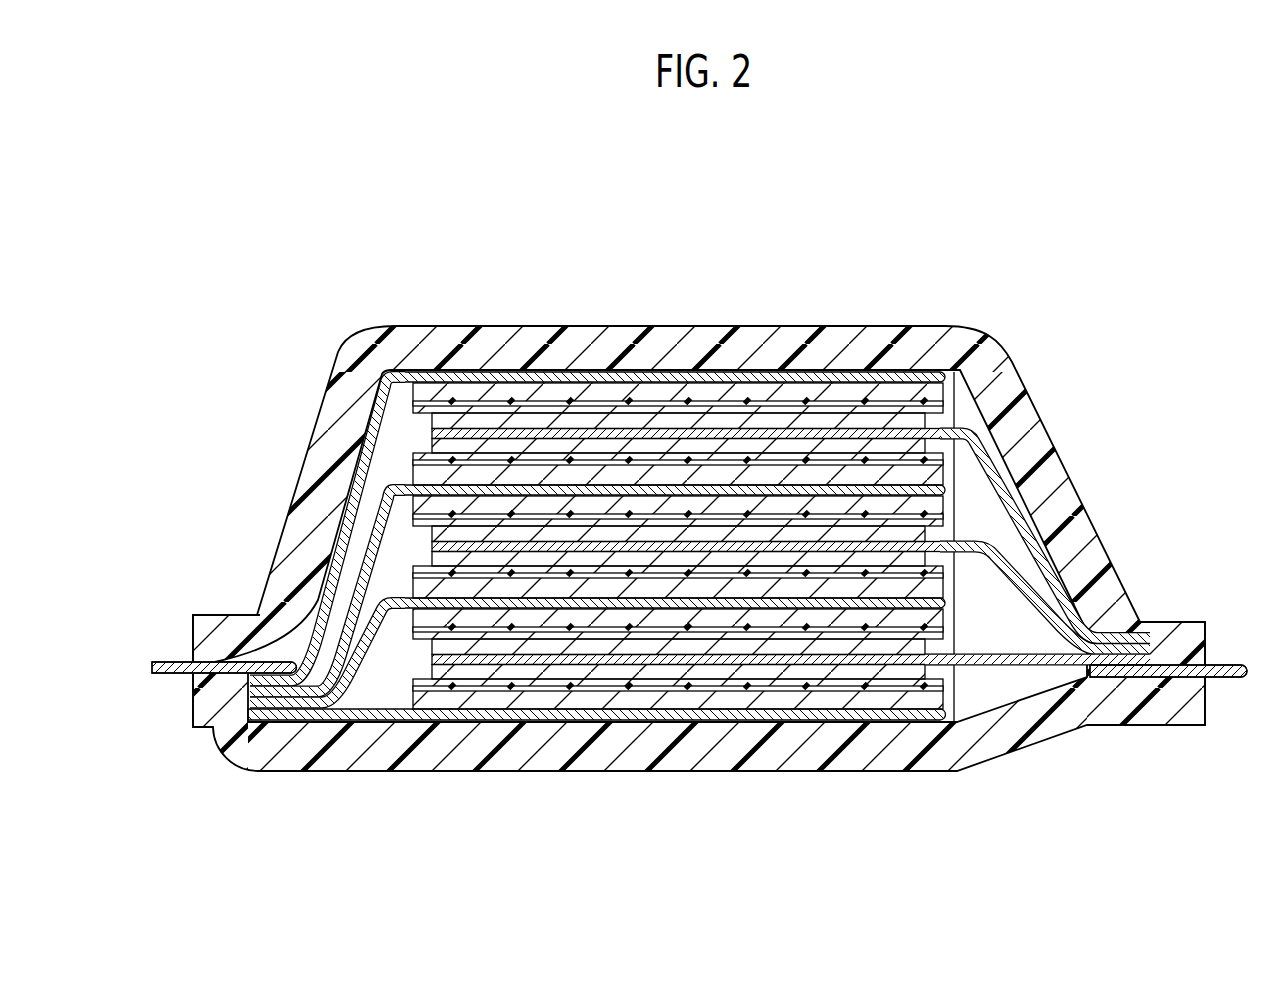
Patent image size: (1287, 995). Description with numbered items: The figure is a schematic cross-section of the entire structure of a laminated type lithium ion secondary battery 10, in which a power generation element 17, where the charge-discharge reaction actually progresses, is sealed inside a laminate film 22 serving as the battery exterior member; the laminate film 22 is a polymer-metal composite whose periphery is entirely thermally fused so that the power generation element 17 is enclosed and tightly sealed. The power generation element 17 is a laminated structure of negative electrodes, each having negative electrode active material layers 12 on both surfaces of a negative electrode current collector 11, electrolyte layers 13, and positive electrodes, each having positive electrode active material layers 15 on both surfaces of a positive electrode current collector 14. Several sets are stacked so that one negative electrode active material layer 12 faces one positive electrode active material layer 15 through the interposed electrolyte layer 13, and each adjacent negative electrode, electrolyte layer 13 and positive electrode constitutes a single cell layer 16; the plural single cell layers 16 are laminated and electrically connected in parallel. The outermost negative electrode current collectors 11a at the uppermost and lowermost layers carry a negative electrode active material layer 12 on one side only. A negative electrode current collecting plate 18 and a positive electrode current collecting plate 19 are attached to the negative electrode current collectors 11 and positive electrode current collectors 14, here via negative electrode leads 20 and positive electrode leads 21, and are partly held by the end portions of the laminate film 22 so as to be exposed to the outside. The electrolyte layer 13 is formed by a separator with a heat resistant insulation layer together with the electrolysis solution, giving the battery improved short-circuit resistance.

The lithium ion secondary battery 10 is at (331, 218).
The negative electrode current collector 11 is at (600, 463).
The outermost negative electrode current collector 11a is at (861, 370).
The negative electrode active material layer 12 is at (558, 388).
The electrolyte layer 13 is at (613, 405).
The positive electrode current collector 14 is at (732, 433).
The positive electrode active material layer 15 is at (663, 417).
The single cell layer 16 is at (678, 317).
The power generation element 17 is at (954, 592).
The negative electrode current collecting plate 18 is at (170, 660).
The positive electrode current collecting plate 19 is at (1228, 663).
The negative electrode lead 20 is at (365, 468).
The positive electrode lead 21 is at (990, 473).
The laminate film 22 is at (1172, 620).